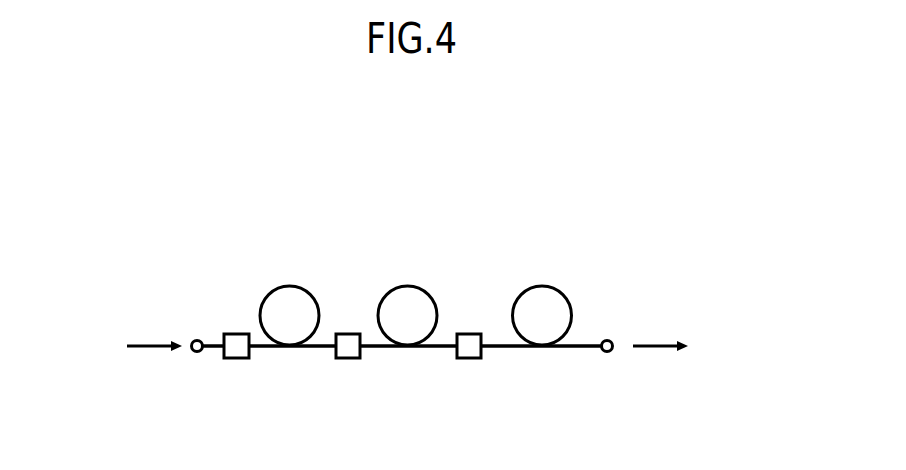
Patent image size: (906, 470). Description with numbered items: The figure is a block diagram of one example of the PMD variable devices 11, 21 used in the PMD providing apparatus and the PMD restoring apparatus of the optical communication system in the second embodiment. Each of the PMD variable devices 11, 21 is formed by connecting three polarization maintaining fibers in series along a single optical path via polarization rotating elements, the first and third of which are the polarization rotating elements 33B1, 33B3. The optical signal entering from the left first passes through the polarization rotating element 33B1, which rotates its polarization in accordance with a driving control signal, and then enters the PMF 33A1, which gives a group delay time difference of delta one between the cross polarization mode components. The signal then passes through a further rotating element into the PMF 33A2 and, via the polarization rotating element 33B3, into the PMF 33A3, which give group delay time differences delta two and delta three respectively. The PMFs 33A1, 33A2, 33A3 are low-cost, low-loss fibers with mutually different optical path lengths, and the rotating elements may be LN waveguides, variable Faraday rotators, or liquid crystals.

The PMD variable device 11 is at (407, 305).
The PMD variable device 21 is at (407, 305).
The polarization rotating element 33B1 is at (237, 358).
The polarization maintaining fiber 33A1 is at (295, 346).
The polarization maintaining fiber 33A2 is at (350, 358).
The polarization rotating element 33B3 is at (470, 358).
The polarization maintaining fiber 33A3 is at (547, 346).